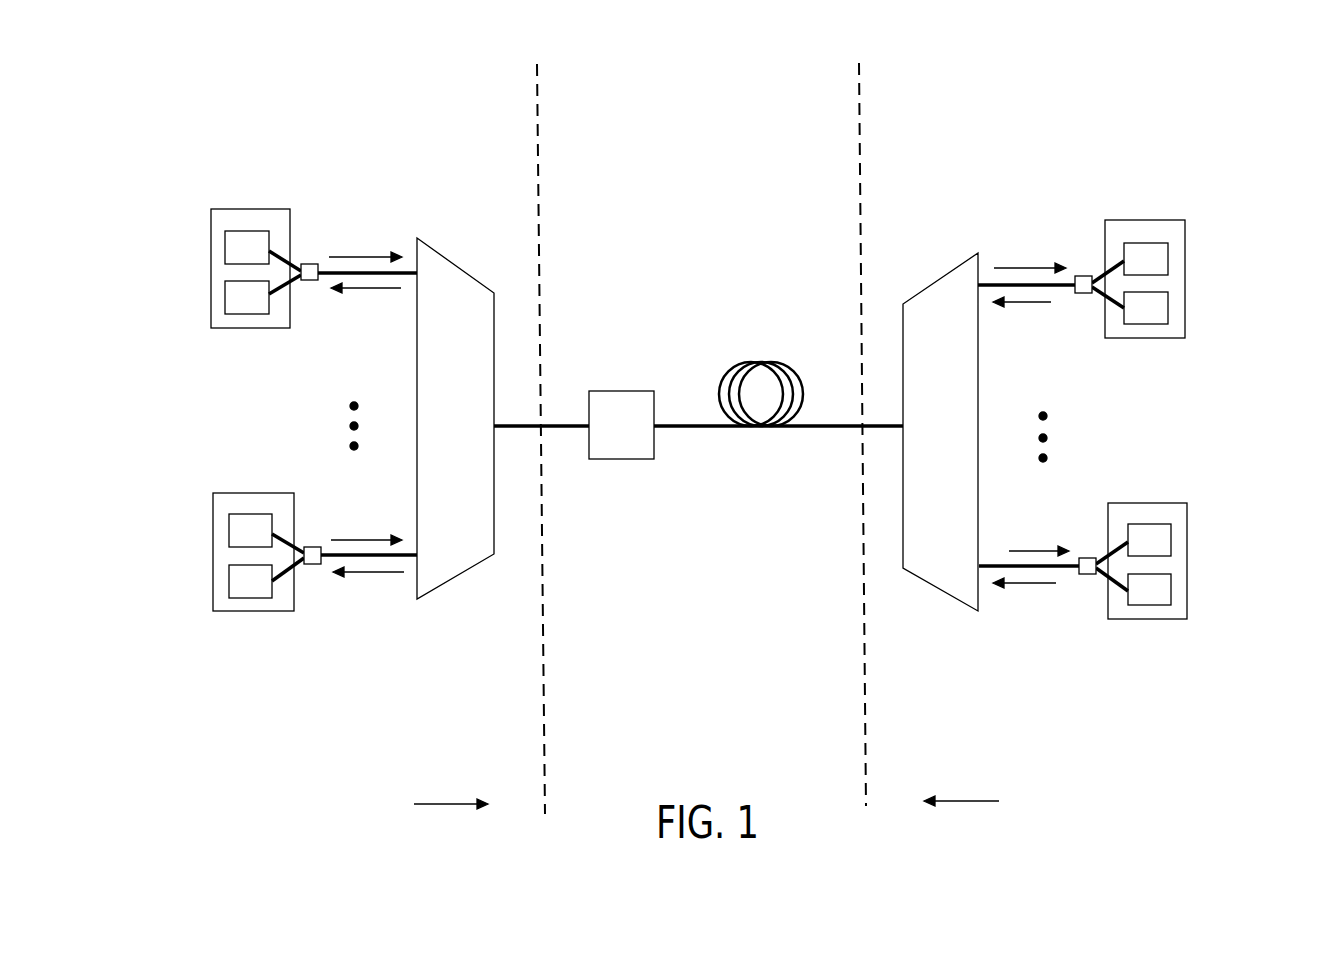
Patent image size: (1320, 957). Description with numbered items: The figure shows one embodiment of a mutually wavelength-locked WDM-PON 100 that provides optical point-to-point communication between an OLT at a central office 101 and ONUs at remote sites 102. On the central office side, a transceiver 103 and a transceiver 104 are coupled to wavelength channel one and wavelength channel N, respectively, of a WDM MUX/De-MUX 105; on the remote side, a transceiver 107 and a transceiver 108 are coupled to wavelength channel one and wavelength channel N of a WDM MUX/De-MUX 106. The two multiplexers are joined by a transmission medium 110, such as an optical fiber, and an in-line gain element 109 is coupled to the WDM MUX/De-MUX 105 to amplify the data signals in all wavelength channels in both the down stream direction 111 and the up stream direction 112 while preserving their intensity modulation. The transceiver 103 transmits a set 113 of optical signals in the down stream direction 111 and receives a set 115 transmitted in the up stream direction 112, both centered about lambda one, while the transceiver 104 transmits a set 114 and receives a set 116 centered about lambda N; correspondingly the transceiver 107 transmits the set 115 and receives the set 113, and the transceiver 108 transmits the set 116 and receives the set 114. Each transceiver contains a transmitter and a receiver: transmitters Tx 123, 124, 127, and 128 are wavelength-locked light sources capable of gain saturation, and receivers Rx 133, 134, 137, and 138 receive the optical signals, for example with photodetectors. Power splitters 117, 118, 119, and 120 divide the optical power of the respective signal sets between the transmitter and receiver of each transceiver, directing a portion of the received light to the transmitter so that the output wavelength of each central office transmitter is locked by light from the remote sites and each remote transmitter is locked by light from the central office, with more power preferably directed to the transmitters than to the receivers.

The wavelength-locked WDM-PON 100 is at (1205, 24).
The central office 101 is at (498, 72).
The remote sites 102 is at (953, 94).
The transceiver 103 is at (235, 241).
The transceiver 104 is at (238, 525).
The WDM MUX/De-MUX 105 is at (458, 277).
The WDM MUX/De-MUX 106 is at (933, 290).
The transceiver 107 is at (1158, 252).
The transceiver 108 is at (1162, 534).
The in-line gain element 109 is at (635, 390).
The transmission medium 110 is at (823, 428).
The down stream direction 111 is at (451, 786).
The up stream direction 112 is at (961, 784).
The set of optical signals 113 is at (373, 253).
The set of optical signals 114 is at (373, 537).
The set of optical signals 115 is at (390, 293).
The set of optical signals 116 is at (390, 575).
The power splitter 117 is at (316, 280).
The power splitter 118 is at (310, 565).
The power splitter 119 is at (1085, 295).
The power splitter 120 is at (1088, 577).
The transmitter Tx 123 is at (224, 241).
The transmitter Tx 124 is at (228, 526).
The transmitter Tx 127 is at (1167, 252).
The transmitter Tx 128 is at (1170, 535).
The receiver Rx 133 is at (224, 291).
The receiver Rx 134 is at (228, 578).
The receiver Rx 137 is at (1167, 300).
The receiver Rx 138 is at (1170, 585).